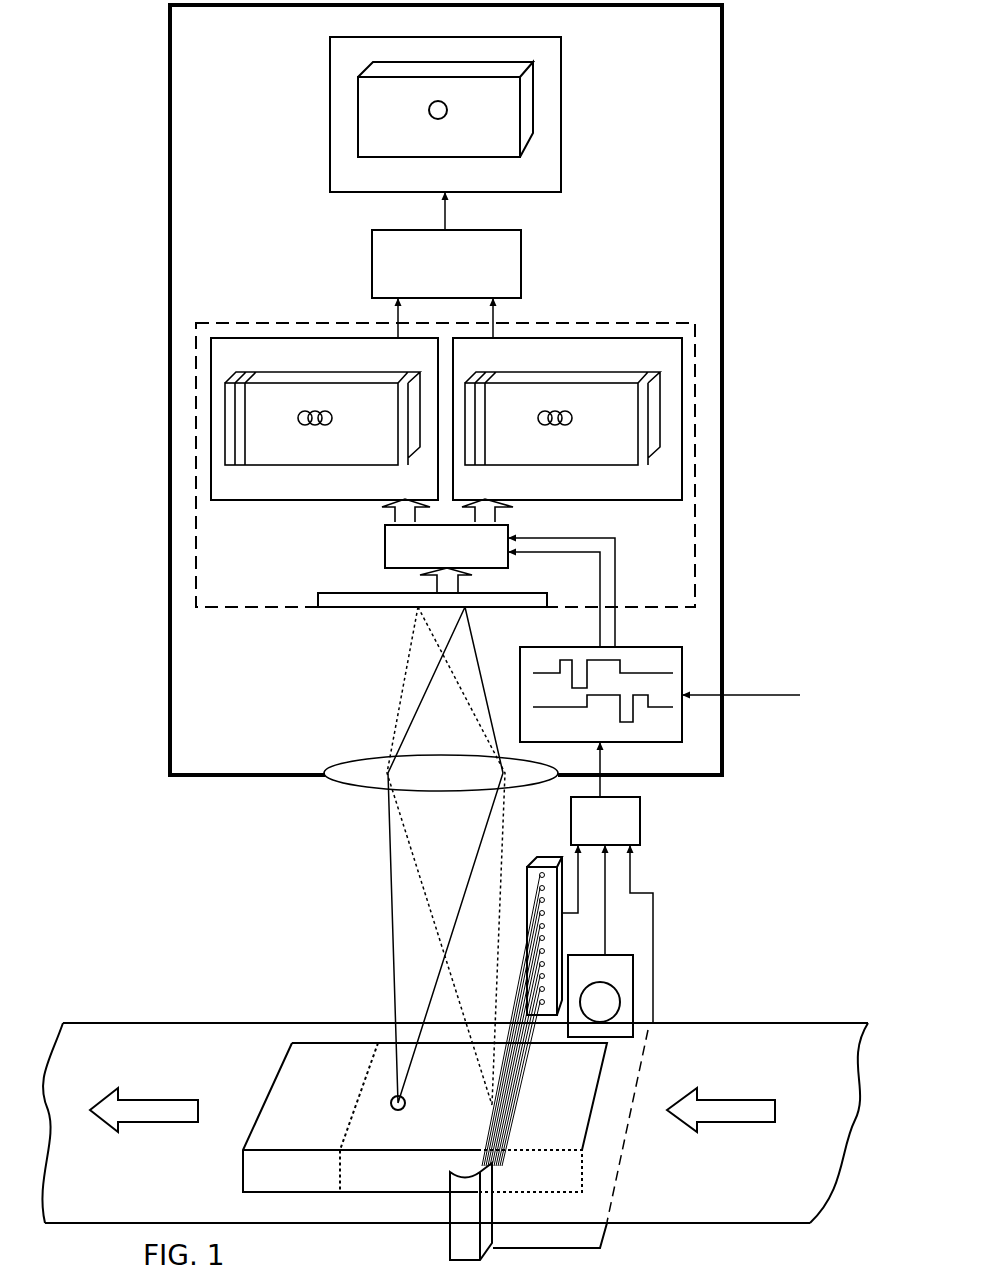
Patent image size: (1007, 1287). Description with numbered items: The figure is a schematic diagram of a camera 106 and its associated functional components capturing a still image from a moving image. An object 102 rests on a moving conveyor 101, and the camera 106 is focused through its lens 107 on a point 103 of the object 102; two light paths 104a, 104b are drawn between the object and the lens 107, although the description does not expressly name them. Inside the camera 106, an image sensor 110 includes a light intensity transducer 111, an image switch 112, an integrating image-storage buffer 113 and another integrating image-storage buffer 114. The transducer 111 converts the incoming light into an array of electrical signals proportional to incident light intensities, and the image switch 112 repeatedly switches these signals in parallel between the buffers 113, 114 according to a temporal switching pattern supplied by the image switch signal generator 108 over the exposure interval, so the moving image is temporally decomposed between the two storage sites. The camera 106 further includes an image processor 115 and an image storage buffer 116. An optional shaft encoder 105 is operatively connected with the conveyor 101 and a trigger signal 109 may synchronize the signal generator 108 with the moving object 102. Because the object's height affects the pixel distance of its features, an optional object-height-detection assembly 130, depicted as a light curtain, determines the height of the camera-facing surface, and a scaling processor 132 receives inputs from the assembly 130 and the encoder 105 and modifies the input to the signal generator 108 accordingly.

The conveyor 101 is at (778, 1194).
The object 102 is at (328, 1114).
The point 103 is at (417, 1142).
The first light beam 104a is at (499, 870).
The second light beam 104b is at (389, 940).
The shaft encoder 105 is at (617, 976).
The camera 106 is at (240, 759).
The lens 107 is at (463, 784).
The image switch signal generator 108 is at (582, 734).
The trigger signal 109 is at (771, 694).
The image sensor 110 is at (262, 597).
The light intensity transducer 111 is at (393, 592).
The image switch 112 is at (493, 561).
The integrating image-storage buffer 113 is at (417, 497).
The integrating image-storage buffer 114 is at (653, 497).
The image processor 115 is at (510, 294).
The image storage buffer 116 is at (533, 187).
The object-height-detection assembly 130 is at (541, 852).
The scaling processor 132 is at (632, 819).